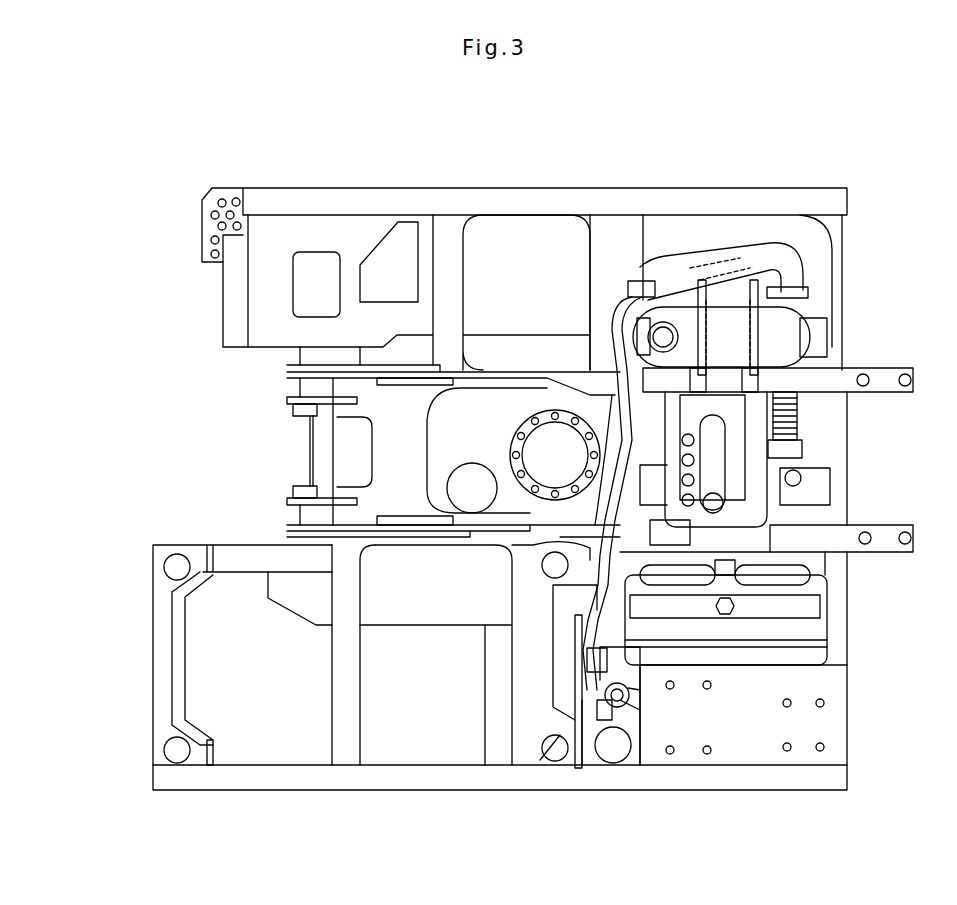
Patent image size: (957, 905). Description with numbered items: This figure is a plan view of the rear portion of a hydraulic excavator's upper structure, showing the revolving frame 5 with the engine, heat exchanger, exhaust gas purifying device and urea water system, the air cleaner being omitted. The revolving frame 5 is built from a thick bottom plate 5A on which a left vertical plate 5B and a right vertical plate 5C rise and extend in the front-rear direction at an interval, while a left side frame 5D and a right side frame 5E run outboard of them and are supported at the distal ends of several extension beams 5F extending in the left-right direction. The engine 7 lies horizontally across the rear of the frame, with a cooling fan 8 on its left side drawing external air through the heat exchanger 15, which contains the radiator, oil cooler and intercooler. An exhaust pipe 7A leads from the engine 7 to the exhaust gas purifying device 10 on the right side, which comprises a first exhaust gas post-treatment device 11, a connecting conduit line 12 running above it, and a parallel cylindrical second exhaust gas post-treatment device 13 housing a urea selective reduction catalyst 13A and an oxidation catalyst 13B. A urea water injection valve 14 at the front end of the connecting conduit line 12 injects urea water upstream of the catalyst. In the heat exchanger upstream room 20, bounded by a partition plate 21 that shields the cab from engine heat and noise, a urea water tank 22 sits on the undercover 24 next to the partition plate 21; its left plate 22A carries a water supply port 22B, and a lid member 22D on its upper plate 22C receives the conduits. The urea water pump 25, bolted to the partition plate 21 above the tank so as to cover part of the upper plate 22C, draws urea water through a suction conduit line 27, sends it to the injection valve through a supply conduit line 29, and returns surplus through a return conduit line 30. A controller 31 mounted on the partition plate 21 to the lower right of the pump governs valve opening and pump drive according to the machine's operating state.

The revolving frame 5 is at (528, 186).
The bottom plate 5A is at (333, 458).
The left vertical plate 5B is at (395, 540).
The right vertical plate 5C is at (513, 370).
The left side frame 5D is at (425, 790).
The right side frame 5E is at (383, 205).
The extension beams 5F is at (447, 250).
The engine 7 is at (730, 462).
The exhaust pipe 7A is at (775, 372).
The cooling fan 8 is at (770, 578).
The exhaust gas purifying device 10 is at (735, 245).
The first exhaust gas post-treatment device 11 is at (665, 295).
The connecting conduit line 12 is at (772, 265).
The second exhaust gas post-treatment device 13 is at (780, 340).
The urea selective reduction catalyst 13A is at (735, 325).
The oxidation catalyst 13B is at (808, 290).
The urea water injection valve 14 is at (632, 296).
The heat exchanger 15 is at (790, 632).
The heat exchanger upstream room 20 is at (772, 725).
The partition plate 21 is at (580, 705).
The urea water tank 22 is at (655, 752).
The left plate 22A is at (590, 770).
The water supply port 22B is at (620, 760).
The upper plate 22C is at (640, 716).
The lid member 22D is at (640, 690).
The undercover 24 is at (783, 714).
The urea water pump 25 is at (585, 693).
The suction conduit line 27 is at (590, 762).
The supply conduit line 29 is at (553, 598).
The return conduit line 30 is at (555, 737).
The controller 31 is at (590, 663).